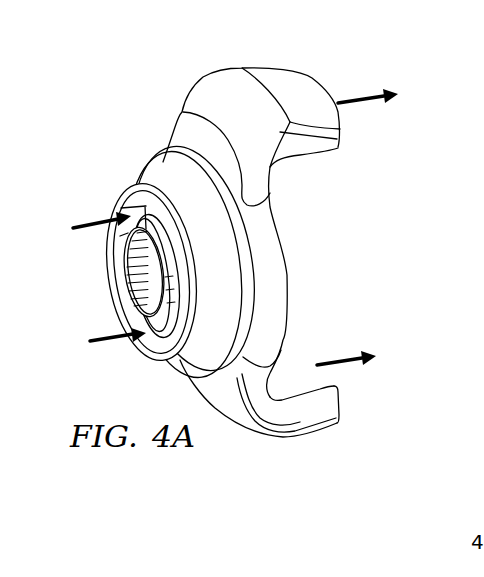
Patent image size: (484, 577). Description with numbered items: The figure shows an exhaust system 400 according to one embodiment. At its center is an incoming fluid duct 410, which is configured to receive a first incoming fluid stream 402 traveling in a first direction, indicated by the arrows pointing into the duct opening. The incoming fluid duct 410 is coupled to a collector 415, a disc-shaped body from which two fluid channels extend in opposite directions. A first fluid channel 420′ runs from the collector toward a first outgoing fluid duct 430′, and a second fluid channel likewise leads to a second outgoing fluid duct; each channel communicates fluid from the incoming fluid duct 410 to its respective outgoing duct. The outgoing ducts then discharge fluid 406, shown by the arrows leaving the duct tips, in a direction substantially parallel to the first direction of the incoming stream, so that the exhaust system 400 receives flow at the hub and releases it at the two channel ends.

The exhaust system 400 is at (111, 106).
The first incoming fluid stream 402 is at (92, 221).
The discharged fluid 406 is at (364, 108).
The incoming fluid duct 410 is at (122, 283).
The collector 415 is at (274, 275).
The first fluid channel 420′ is at (190, 96).
The first outgoing fluid duct 430′ is at (315, 88).